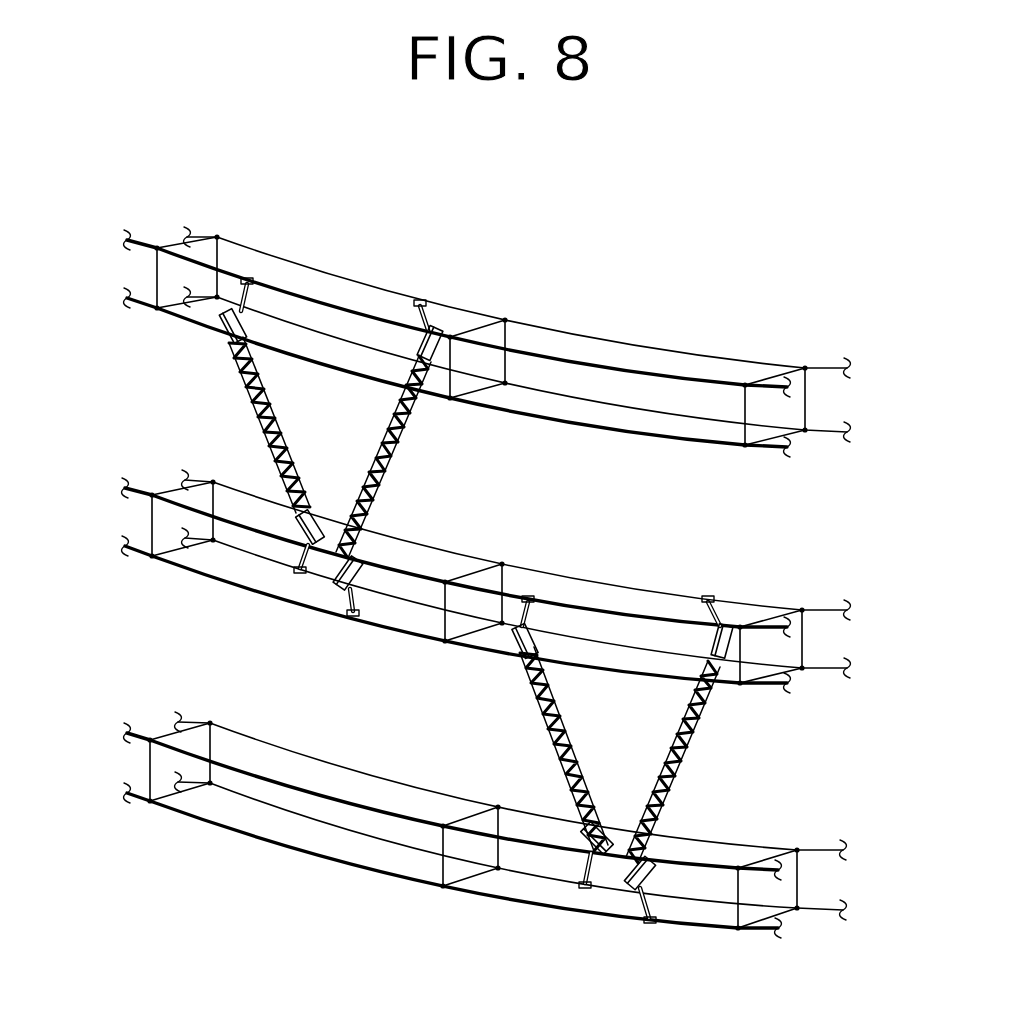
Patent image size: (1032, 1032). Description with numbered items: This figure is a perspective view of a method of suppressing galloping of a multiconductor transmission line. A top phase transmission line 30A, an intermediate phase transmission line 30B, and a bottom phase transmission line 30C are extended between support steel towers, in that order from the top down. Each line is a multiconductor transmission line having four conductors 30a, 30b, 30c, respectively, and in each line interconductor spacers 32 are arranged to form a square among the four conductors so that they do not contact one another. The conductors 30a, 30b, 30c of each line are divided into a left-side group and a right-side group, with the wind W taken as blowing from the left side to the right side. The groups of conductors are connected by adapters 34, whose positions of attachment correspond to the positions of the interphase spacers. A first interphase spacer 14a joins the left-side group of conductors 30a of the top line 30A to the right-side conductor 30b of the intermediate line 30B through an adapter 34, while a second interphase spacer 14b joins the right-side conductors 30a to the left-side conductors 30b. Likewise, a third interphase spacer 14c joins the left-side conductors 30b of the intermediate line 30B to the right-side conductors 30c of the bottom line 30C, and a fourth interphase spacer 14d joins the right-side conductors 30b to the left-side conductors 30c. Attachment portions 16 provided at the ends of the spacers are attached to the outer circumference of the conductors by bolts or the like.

The first interphase spacer 14a is at (257, 413).
The second interphase spacer 14b is at (407, 442).
The third interphase spacer 14c is at (542, 718).
The fourth interphase spacer 14d is at (697, 735).
The attachment portion 16 is at (218, 333).
The top phase transmission line 30A is at (538, 320).
The intermediate phase transmission line 30B is at (430, 535).
The bottom phase transmission line 30C is at (385, 773).
The conductor 30a is at (180, 262).
The conductor 30b is at (252, 550).
The conductor 30c is at (557, 903).
The interconductor spacer 32 is at (185, 242).
The adapter 34 is at (262, 303).
The wind W is at (118, 425).